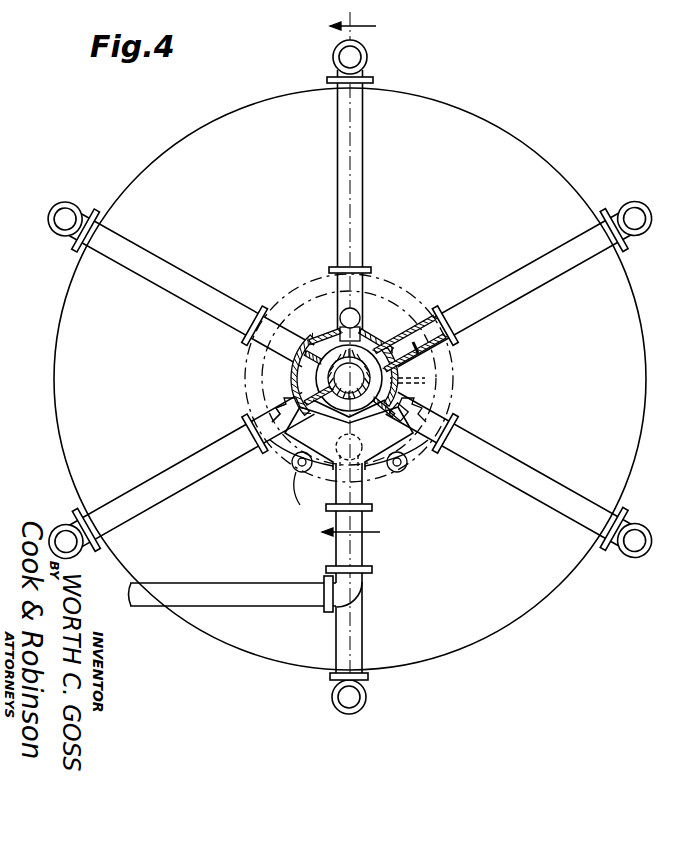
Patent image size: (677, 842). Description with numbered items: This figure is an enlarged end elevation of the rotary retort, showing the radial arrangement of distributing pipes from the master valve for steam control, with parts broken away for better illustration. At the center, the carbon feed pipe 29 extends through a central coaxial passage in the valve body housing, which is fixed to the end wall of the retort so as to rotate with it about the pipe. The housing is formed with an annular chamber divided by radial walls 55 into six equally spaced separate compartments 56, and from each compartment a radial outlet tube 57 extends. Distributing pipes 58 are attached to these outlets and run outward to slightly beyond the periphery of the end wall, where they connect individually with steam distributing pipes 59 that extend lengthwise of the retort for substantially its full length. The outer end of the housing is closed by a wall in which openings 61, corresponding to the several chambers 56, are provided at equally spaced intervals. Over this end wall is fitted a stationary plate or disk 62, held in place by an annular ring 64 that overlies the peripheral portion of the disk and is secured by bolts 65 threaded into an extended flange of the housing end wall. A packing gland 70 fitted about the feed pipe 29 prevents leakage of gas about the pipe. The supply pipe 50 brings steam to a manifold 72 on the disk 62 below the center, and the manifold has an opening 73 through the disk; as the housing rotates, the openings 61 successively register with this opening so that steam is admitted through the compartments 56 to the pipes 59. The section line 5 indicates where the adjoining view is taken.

The section line arrows 5 is at (351, 282).
The carbon feed pipe 29 is at (392, 372).
The supply pipe 50 is at (228, 596).
The radial walls 55 is at (291, 390).
The compartments 56 is at (292, 364).
The radial outlet tube 57 is at (372, 292).
The distributing pipes 58 is at (338, 181).
The steam distributing pipes 59 is at (350, 58).
The openings 61 is at (448, 350).
The stationary plate or disk 62 is at (412, 448).
The annular ring 64 is at (300, 472).
The bolts 65 is at (305, 478).
The packing gland 70 is at (408, 405).
The manifold 72 is at (290, 462).
The opening 73 is at (380, 490).